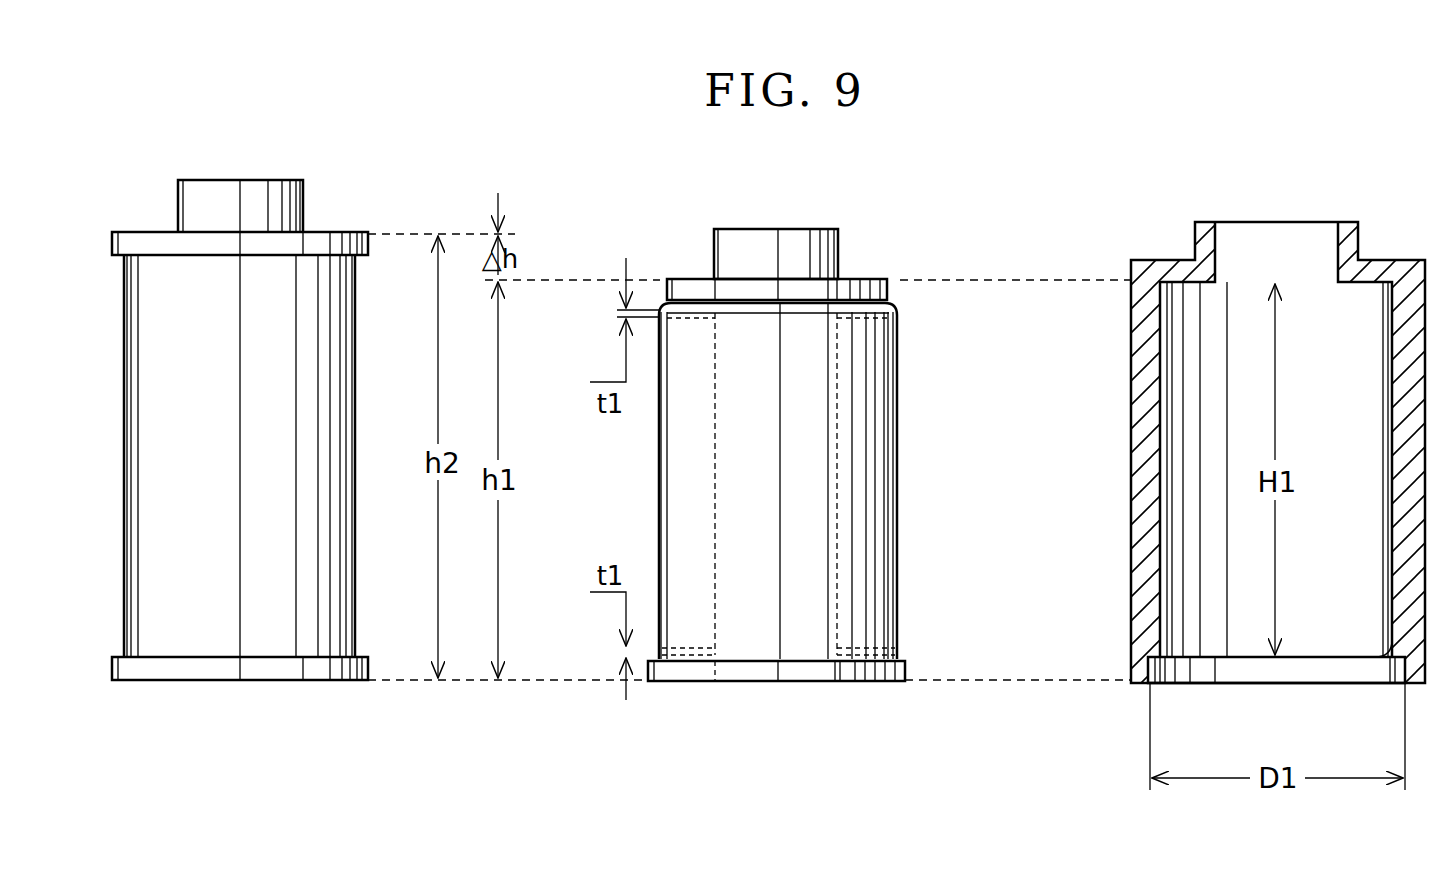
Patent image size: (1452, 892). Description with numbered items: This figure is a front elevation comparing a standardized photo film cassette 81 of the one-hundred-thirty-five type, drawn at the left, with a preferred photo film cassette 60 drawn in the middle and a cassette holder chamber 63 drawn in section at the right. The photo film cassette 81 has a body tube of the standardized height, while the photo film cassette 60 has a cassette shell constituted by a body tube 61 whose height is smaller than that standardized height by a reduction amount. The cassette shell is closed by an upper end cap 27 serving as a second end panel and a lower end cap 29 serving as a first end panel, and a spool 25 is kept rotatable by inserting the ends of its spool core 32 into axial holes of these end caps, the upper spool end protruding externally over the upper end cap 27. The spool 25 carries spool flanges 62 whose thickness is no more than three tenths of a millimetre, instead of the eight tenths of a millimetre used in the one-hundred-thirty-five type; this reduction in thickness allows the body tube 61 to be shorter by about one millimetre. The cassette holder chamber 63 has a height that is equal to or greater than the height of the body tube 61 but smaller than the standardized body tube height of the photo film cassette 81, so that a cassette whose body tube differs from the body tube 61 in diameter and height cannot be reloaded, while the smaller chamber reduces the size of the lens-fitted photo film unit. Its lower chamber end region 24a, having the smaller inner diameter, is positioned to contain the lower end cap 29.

The spool 25 is at (841, 244).
The upper end cap 27 is at (893, 296).
The spool flanges 62 is at (866, 350).
The photo film cassette 60 is at (844, 481).
The body tube 61 is at (887, 477).
The spool core 32 is at (838, 532).
The lower end cap 29 is at (866, 683).
The photo film cassette 81 is at (244, 684).
The lower chamber end region 24a is at (1131, 672).
The cassette holder chamber 63 is at (1390, 632).